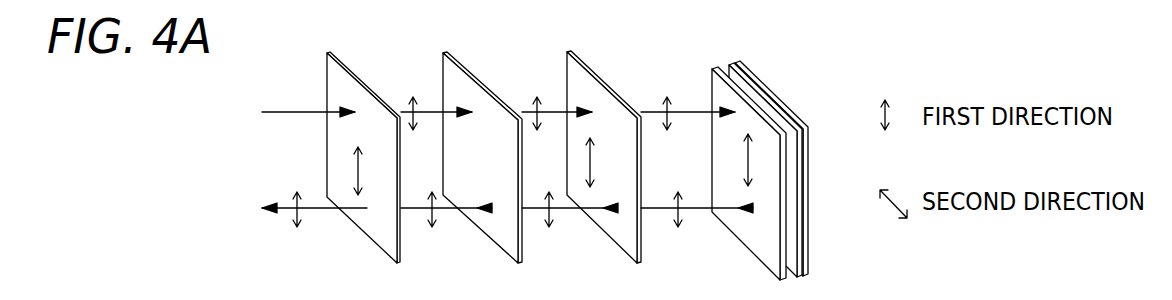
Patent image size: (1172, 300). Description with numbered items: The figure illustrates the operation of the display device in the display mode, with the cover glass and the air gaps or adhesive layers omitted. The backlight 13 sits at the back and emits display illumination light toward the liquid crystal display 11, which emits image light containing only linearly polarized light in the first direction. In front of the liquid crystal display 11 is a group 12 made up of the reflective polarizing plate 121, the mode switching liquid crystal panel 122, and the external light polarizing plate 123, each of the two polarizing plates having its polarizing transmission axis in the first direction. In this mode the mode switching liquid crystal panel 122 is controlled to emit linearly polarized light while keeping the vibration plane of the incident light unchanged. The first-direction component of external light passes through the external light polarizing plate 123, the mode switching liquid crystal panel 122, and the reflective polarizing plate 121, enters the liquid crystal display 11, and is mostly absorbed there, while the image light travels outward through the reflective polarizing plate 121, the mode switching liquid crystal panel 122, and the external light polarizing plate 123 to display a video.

The liquid crystal display 11 is at (710, 80).
The mode switching unit 12 is at (668, 44).
The backlight 13 is at (768, 94).
The reflective polarizing plate 121 is at (613, 94).
The mode switching liquid crystal panel 122 is at (497, 97).
The external light polarizing plate 123 is at (373, 94).